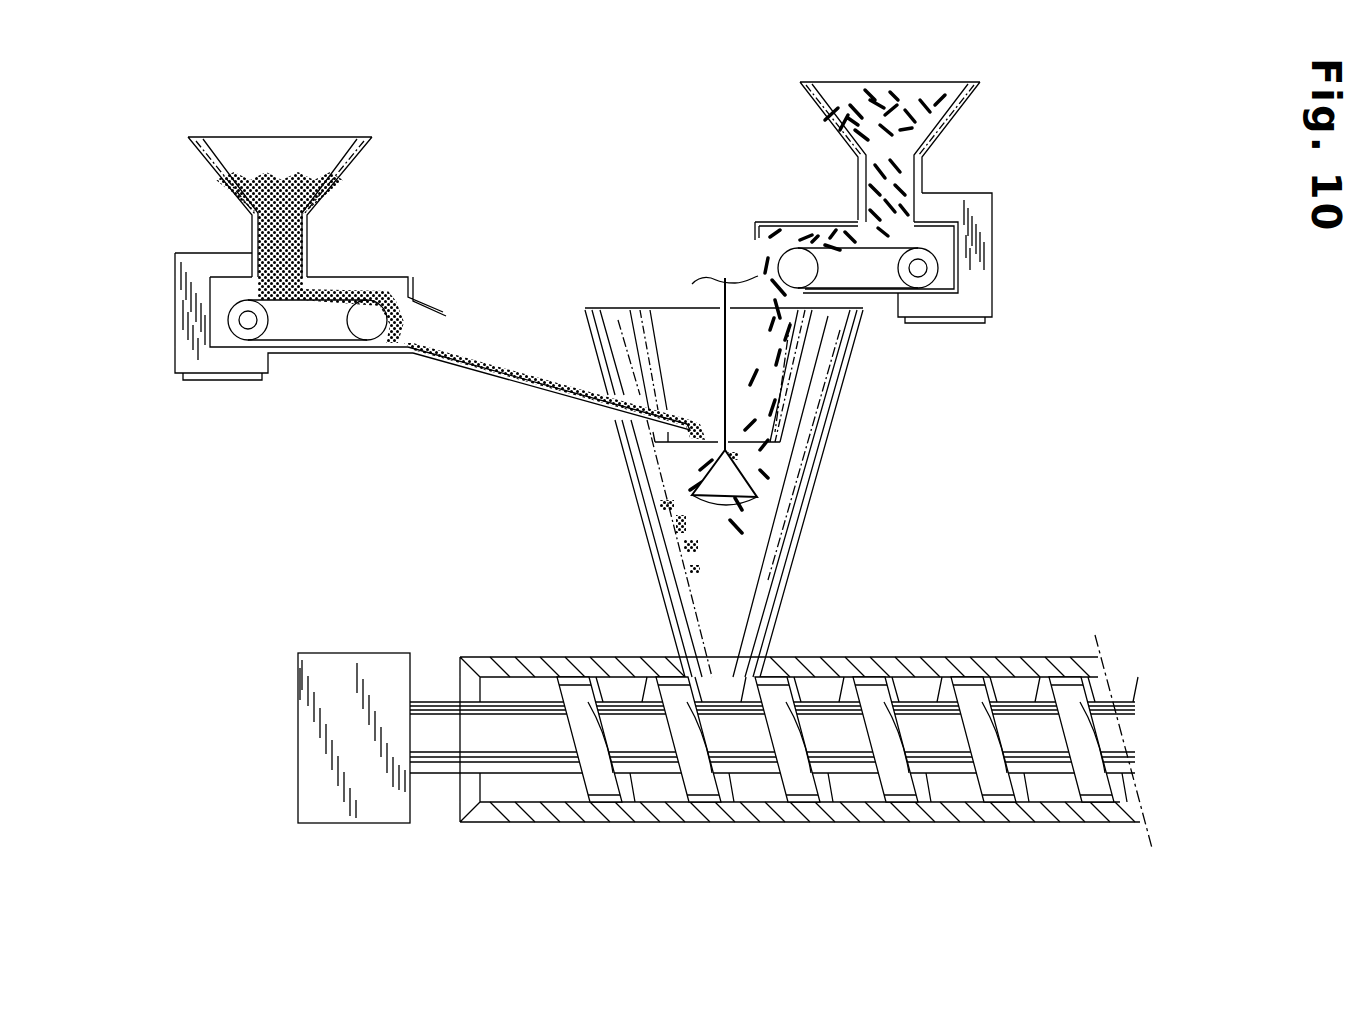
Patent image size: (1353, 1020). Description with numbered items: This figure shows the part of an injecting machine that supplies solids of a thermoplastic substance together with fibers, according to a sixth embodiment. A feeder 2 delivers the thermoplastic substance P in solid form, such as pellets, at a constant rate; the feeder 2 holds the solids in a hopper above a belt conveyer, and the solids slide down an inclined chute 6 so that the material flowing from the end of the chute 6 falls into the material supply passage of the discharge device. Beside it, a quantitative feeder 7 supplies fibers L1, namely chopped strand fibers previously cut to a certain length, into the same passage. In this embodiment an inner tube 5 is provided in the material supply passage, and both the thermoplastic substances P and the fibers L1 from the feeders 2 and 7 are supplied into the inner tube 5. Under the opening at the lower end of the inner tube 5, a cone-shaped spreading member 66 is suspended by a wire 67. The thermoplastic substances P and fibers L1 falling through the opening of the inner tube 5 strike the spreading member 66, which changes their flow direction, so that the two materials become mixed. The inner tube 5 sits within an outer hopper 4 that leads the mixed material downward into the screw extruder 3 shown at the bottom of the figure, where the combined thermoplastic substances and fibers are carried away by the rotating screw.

The feeder 2 is at (398, 205).
The thermoplastic substances P is at (506, 364).
The inclined chute 6 is at (537, 386).
The quantitative feeder 7 is at (960, 262).
The fibers L1 is at (893, 105).
The hopper 4 is at (636, 486).
The inner tube 5 is at (783, 417).
The wire 67 is at (722, 340).
The cone-shaped spreading member 66 is at (768, 480).
The extruder 3 is at (915, 638).